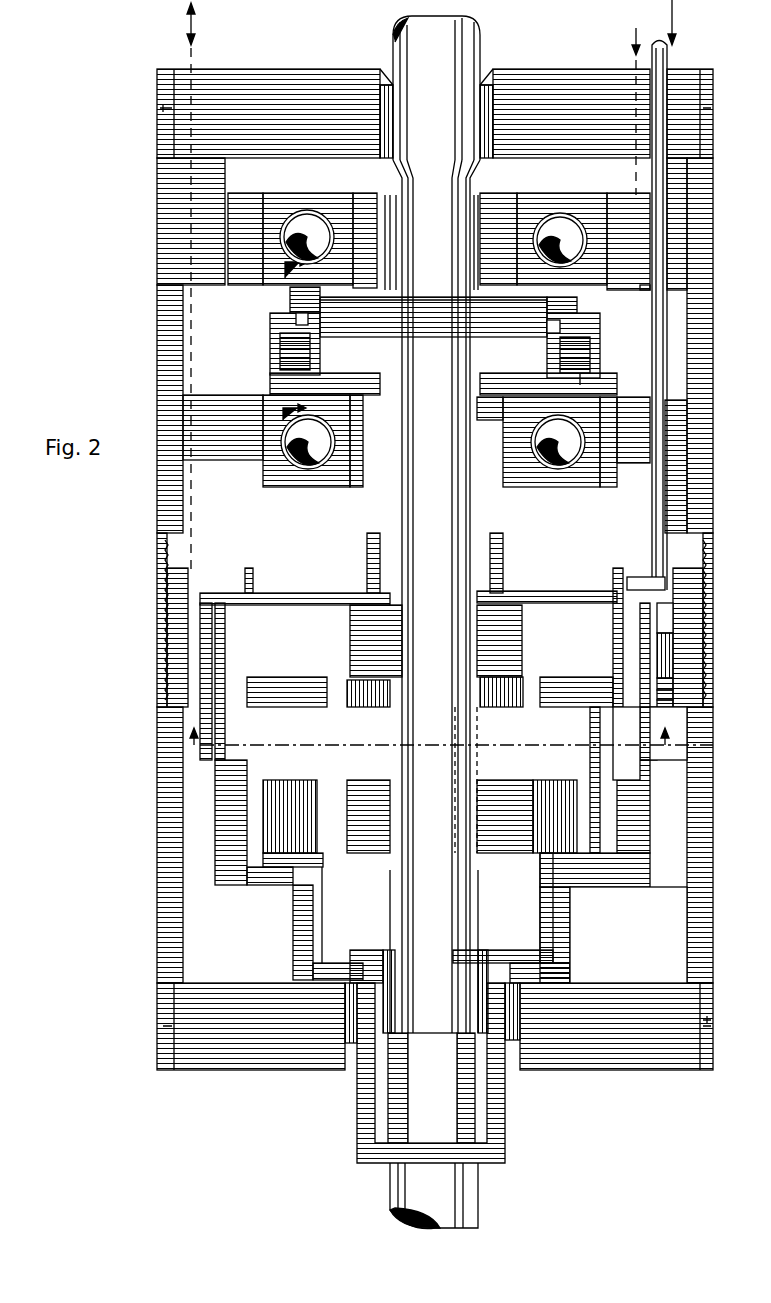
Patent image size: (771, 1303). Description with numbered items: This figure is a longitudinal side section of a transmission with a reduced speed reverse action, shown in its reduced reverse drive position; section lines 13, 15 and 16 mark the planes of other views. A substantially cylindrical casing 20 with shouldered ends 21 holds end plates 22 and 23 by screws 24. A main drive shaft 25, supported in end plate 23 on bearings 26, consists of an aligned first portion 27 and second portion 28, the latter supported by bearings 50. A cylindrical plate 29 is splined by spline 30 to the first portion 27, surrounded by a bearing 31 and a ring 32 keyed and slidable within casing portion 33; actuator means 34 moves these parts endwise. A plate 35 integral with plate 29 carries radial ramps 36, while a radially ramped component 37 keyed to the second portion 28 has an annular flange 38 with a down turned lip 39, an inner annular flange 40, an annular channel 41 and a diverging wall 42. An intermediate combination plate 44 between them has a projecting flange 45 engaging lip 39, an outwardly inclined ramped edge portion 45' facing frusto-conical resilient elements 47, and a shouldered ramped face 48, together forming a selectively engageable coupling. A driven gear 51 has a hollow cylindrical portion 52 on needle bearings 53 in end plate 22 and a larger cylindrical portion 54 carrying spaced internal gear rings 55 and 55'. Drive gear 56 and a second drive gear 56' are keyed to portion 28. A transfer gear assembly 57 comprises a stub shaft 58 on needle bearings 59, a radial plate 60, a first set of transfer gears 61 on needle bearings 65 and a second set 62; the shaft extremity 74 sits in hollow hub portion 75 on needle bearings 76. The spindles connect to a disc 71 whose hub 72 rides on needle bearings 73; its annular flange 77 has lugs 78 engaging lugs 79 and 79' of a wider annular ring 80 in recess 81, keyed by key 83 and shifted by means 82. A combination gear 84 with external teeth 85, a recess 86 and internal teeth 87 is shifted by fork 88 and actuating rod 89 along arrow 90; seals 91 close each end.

The section line 13 is at (448, 727).
The section line 15 is at (294, 414).
The section line 16 is at (296, 268).
The casing 20 is at (705, 340).
The shouldered ends 21 is at (700, 158).
The end plate 22 is at (612, 1070).
The end plate 23 is at (585, 69).
The screws 24 is at (715, 1018).
The main drive shaft 25 is at (460, 60).
The bearings 26 is at (383, 100).
The first portion 27 is at (436, 315).
The second portion 28 is at (436, 751).
The cylindrical plate 29 is at (362, 198).
The spline 30 is at (478, 172).
The bearing 31 is at (580, 198).
The ring 32 is at (620, 198).
The casing portion 33 is at (228, 162).
The actuator means 34 is at (636, 35).
The plate 35 is at (575, 298).
The radial ramps 36 is at (292, 300).
The radially ramped component 37 is at (373, 380).
The annular flange 38 is at (592, 365).
The down turned lip 39 is at (588, 322).
The inner annular flange 40 is at (555, 352).
The annular channel 41 is at (582, 378).
The wall 42 is at (568, 385).
The intermediate combination plate 44 is at (418, 318).
The projecting flange 45 is at (593, 336).
The outwardly inclined perimetrical edge portion 45' is at (329, 337).
The frusto-conical resilient elements 47 is at (290, 353).
The shouldered perimetrical face 48 is at (276, 322).
The bearings 50 is at (315, 465).
The driven gear 51 is at (478, 1180).
The hollow cylindrical portion 52 is at (505, 1105).
The needle bearings 53 is at (518, 1040).
The further cylindrical portion 54 is at (640, 878).
The annular internal gear ring 55 is at (579, 780).
The internal gear ring 55' is at (616, 655).
The drive gear 56 is at (503, 904).
The second drive gear 56' is at (499, 715).
The transfer gear assembly 57 is at (451, 1078).
The stub shaft 58 is at (408, 1063).
The needle bearings 59 is at (368, 968).
The radial plate 60 is at (300, 835).
The first set of transfer gears 61 is at (610, 840).
The second set of transfer gears 62 is at (521, 780).
The needle bearings 65 is at (637, 765).
The plate or disc 71 is at (555, 603).
The hub 72 is at (495, 555).
The needle bearings 73 is at (370, 550).
The extremity 74 is at (418, 902).
The hollow hub portion 75 is at (390, 968).
The needle bearings 76 is at (465, 955).
The annular flange 77 is at (675, 672).
The lugs 78 is at (672, 690).
The lugs 79 is at (705, 723).
The lugs 79' is at (708, 616).
The annular ring 80 is at (672, 645).
The recess 81 is at (708, 548).
The ring moving means 82 is at (176, 289).
The key 83 is at (160, 555).
The combination gear 84 is at (605, 707).
The gear teeth 85 is at (655, 740).
The recess 86 is at (352, 690).
The gear teeth 87 is at (525, 668).
The shifting fork 88 is at (620, 578).
The actuating rod 89 is at (660, 340).
The double headed arrow 90 is at (674, 20).
The seals 91 is at (485, 70).